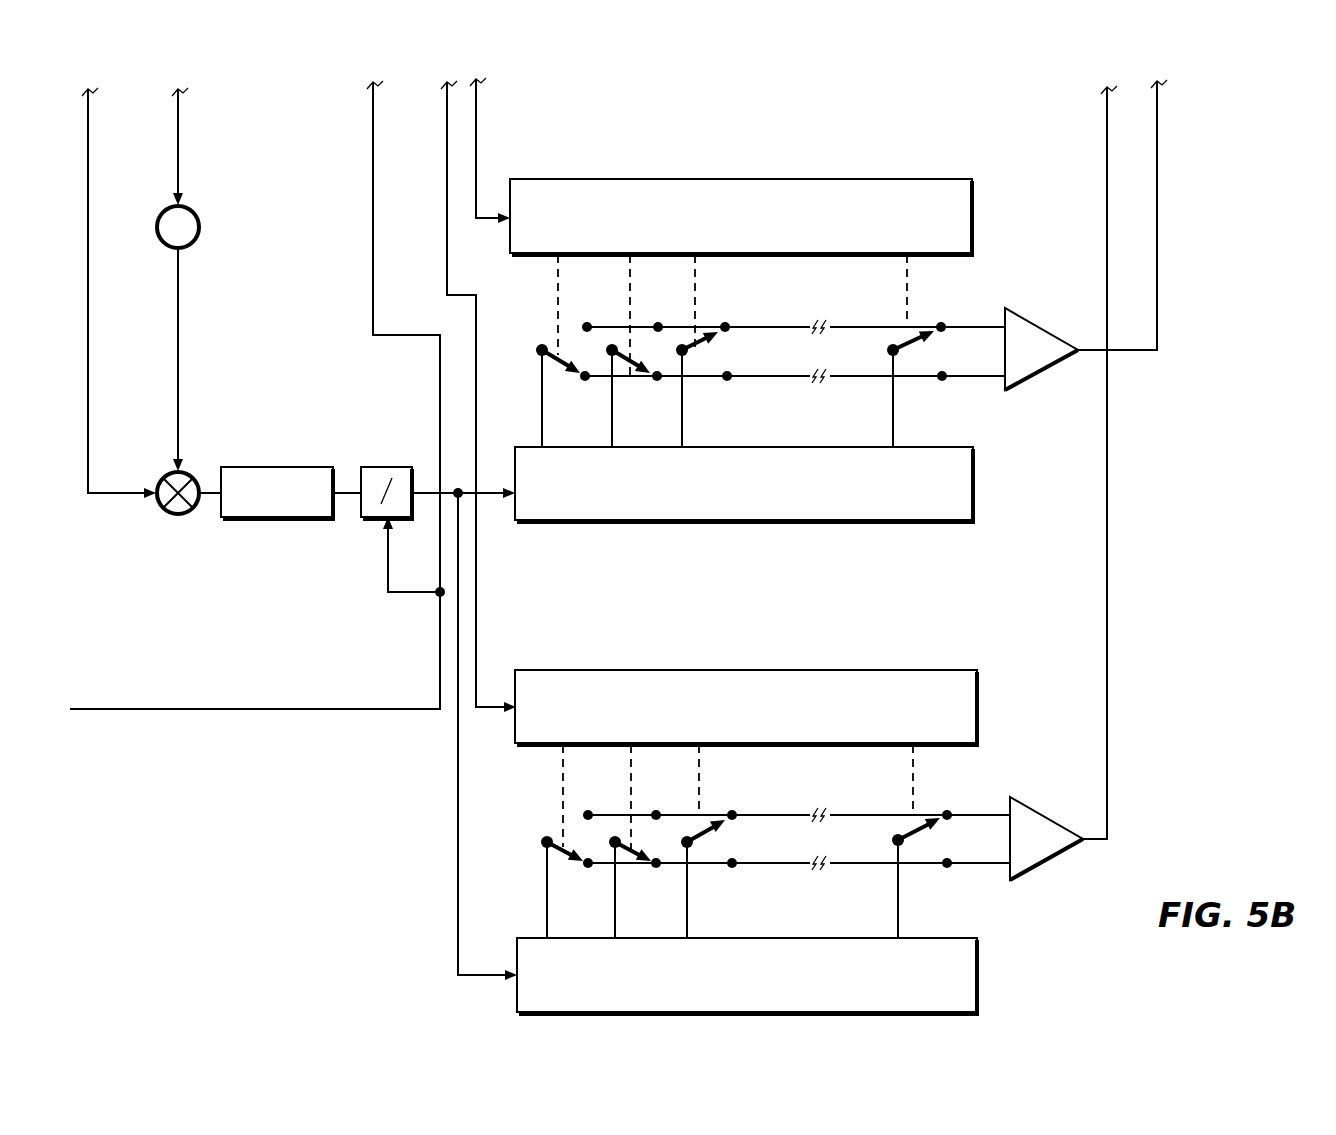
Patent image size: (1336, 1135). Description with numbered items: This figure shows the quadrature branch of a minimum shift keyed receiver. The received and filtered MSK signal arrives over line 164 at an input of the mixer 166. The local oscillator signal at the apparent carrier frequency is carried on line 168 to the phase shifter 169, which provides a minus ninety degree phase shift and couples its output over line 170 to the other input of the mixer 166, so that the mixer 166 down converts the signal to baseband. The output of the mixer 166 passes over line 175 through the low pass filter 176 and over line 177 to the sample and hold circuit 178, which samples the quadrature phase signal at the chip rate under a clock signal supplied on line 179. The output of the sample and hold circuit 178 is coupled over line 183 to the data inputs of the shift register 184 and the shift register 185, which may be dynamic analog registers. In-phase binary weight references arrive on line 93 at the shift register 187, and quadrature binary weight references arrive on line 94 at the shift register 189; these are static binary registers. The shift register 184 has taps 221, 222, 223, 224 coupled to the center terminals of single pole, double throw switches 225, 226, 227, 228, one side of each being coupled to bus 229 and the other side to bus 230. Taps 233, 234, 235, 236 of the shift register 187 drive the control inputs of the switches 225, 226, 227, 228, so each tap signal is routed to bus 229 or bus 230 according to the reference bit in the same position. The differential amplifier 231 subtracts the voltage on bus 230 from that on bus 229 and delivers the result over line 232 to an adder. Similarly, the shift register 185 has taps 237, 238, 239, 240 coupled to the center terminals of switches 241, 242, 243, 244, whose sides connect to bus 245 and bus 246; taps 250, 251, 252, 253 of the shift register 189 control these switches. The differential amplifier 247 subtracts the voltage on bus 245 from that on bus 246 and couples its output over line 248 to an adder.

The line 164 is at (88, 160).
The line 168 is at (178, 158).
The phase shifter 169 is at (193, 243).
The line 170 is at (178, 390).
The mixer 166 is at (167, 476).
The line 175 is at (209, 490).
The low pass filter 176 is at (265, 520).
The line 177 is at (345, 490).
The sample and hold circuit 178 is at (372, 520).
The line 183 is at (490, 500).
The line 179 is at (248, 698).
The line 94 is at (447, 144).
The line 93 is at (476, 150).
The shift register 187 is at (845, 178).
The tap 233 is at (558, 290).
The tap 234 is at (630, 290).
The tap 235 is at (695, 290).
The tap 236 is at (907, 293).
The bus 229 is at (862, 323).
The bus 230 is at (858, 378).
The tap 221 is at (545, 437).
The tap 222 is at (615, 437).
The tap 223 is at (685, 437).
The tap 224 is at (893, 433).
The switch 225 is at (560, 388).
The switch 226 is at (632, 388).
The switch 227 is at (707, 343).
The switch 228 is at (918, 343).
The differential amplifier 231 is at (1022, 318).
The line 232 is at (1157, 144).
The line 248 is at (1107, 140).
The shift register 184 is at (978, 463).
The shift register 189 is at (970, 672).
The tap 250 is at (563, 770).
The tap 251 is at (631, 772).
The tap 252 is at (699, 772).
The tap 253 is at (913, 773).
The bus 245 is at (866, 812).
The bus 246 is at (866, 866).
The tap 237 is at (552, 928).
The tap 238 is at (620, 928).
The tap 239 is at (692, 928).
The tap 240 is at (898, 925).
The switch 241 is at (565, 873).
The switch 242 is at (633, 873).
The switch 243 is at (710, 833).
The switch 244 is at (923, 832).
The differential amplifier 247 is at (1028, 798).
The shift register 185 is at (978, 972).